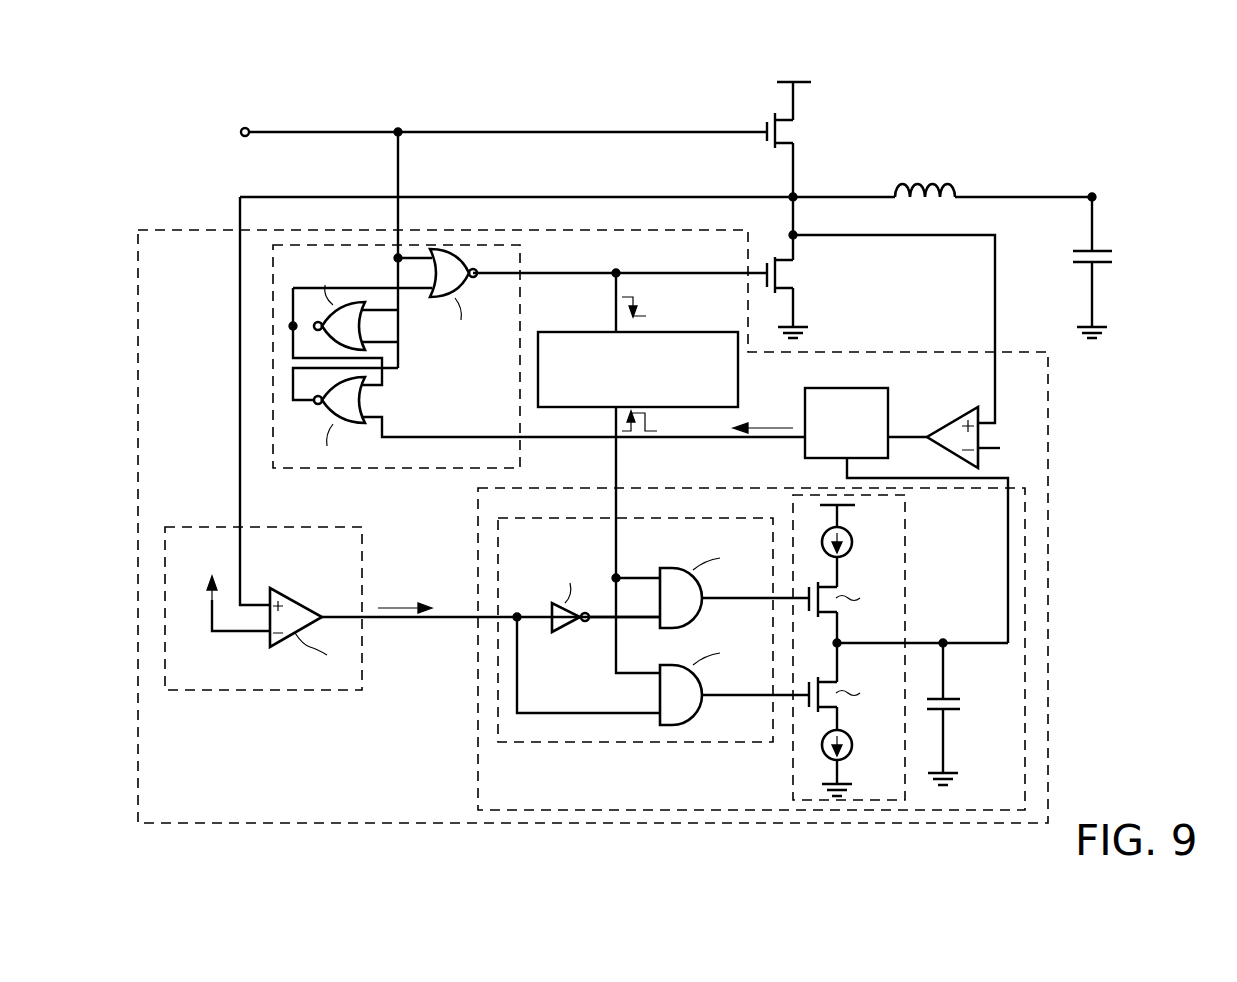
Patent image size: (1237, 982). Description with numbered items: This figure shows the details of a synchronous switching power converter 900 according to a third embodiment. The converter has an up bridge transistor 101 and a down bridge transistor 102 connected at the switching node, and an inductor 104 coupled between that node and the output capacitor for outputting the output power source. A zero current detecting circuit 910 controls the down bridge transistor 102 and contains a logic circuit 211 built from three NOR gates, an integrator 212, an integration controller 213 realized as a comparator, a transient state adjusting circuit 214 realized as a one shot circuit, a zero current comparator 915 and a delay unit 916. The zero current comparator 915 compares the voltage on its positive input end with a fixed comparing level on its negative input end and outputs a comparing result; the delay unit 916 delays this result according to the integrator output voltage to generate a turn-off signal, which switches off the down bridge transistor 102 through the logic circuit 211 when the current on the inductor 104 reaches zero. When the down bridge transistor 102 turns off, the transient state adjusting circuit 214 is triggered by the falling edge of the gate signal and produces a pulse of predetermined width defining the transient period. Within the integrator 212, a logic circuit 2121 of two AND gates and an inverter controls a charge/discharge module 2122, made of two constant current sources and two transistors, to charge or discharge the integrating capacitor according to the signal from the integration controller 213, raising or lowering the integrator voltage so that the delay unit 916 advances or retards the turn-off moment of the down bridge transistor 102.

The synchronous switching power converter 900 is at (1116, 120).
The up bridge transistor 101 is at (795, 132).
The down bridge transistor 102 is at (795, 275).
The inductor 104 is at (920, 181).
The zero current detecting circuit 910 is at (1048, 573).
The logic circuit 211 is at (520, 308).
The transient state adjusting circuit 214 is at (738, 372).
The delay unit 916 is at (840, 388).
The zero current comparator 915 is at (955, 418).
The integration controller 213 is at (262, 692).
The integrator 212 is at (478, 717).
The logic circuit 2121 is at (622, 743).
The charge/discharge module 2122 is at (905, 555).